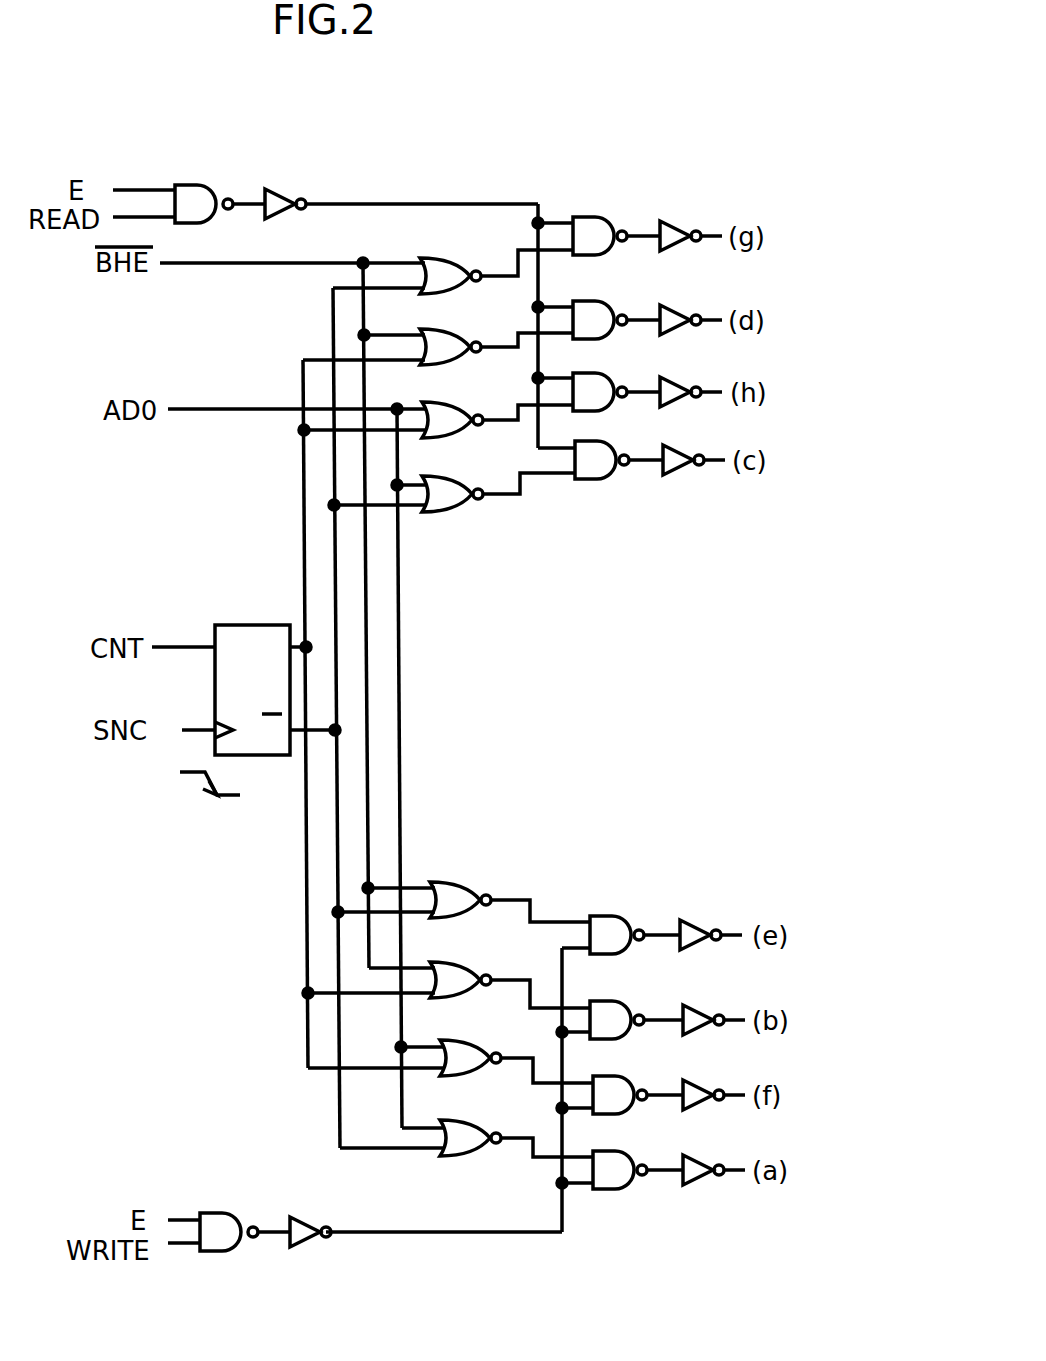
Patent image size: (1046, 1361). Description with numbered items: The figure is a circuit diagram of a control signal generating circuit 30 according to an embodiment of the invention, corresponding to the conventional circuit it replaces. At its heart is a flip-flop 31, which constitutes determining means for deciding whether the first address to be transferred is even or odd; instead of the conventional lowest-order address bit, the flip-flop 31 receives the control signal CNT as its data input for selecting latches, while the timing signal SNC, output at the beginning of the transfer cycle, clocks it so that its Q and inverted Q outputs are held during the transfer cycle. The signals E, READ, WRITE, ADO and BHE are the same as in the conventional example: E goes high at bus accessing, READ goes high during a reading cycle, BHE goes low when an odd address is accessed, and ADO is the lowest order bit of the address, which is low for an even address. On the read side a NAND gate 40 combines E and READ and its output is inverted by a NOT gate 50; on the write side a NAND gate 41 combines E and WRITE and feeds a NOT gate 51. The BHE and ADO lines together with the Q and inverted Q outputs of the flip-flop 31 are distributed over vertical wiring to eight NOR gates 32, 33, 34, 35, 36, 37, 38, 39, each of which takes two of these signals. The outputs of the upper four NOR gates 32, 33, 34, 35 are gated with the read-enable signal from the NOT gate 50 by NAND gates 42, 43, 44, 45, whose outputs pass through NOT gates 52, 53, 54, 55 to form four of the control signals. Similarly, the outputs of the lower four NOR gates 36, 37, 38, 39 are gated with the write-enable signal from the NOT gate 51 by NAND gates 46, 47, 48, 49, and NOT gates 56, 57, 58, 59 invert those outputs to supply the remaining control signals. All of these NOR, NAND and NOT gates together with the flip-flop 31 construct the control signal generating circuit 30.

The control signal generating circuit 30 is at (530, 170).
The flip-flop 31 is at (215, 625).
The NOR gate 32 is at (420, 262).
The NOR gate 33 is at (442, 330).
The NOR gate 34 is at (444, 403).
The NOR gate 35 is at (444, 480).
The NOR gate 36 is at (440, 879).
The NOR gate 37 is at (455, 974).
The NOR gate 38 is at (454, 1044).
The NOR gate 39 is at (461, 1122).
The NAND gate 40 is at (204, 188).
The NAND gate 41 is at (227, 1220).
The NAND gate 42 is at (585, 218).
The NAND gate 43 is at (594, 302).
The NAND gate 44 is at (594, 375).
The NAND gate 45 is at (598, 448).
The NAND gate 46 is at (604, 914).
The NAND gate 47 is at (608, 1000).
The NAND gate 48 is at (610, 1079).
The NAND gate 49 is at (614, 1154).
The NOT gate 50 is at (284, 192).
The NOT gate 51 is at (312, 1218).
The NOT gate 52 is at (692, 233).
The NOT gate 53 is at (675, 302).
The NOT gate 54 is at (675, 378).
The NOT gate 55 is at (678, 452).
The NOT gate 56 is at (692, 914).
The NOT gate 57 is at (692, 1002).
The NOT gate 58 is at (700, 1082).
The NOT gate 59 is at (700, 1156).